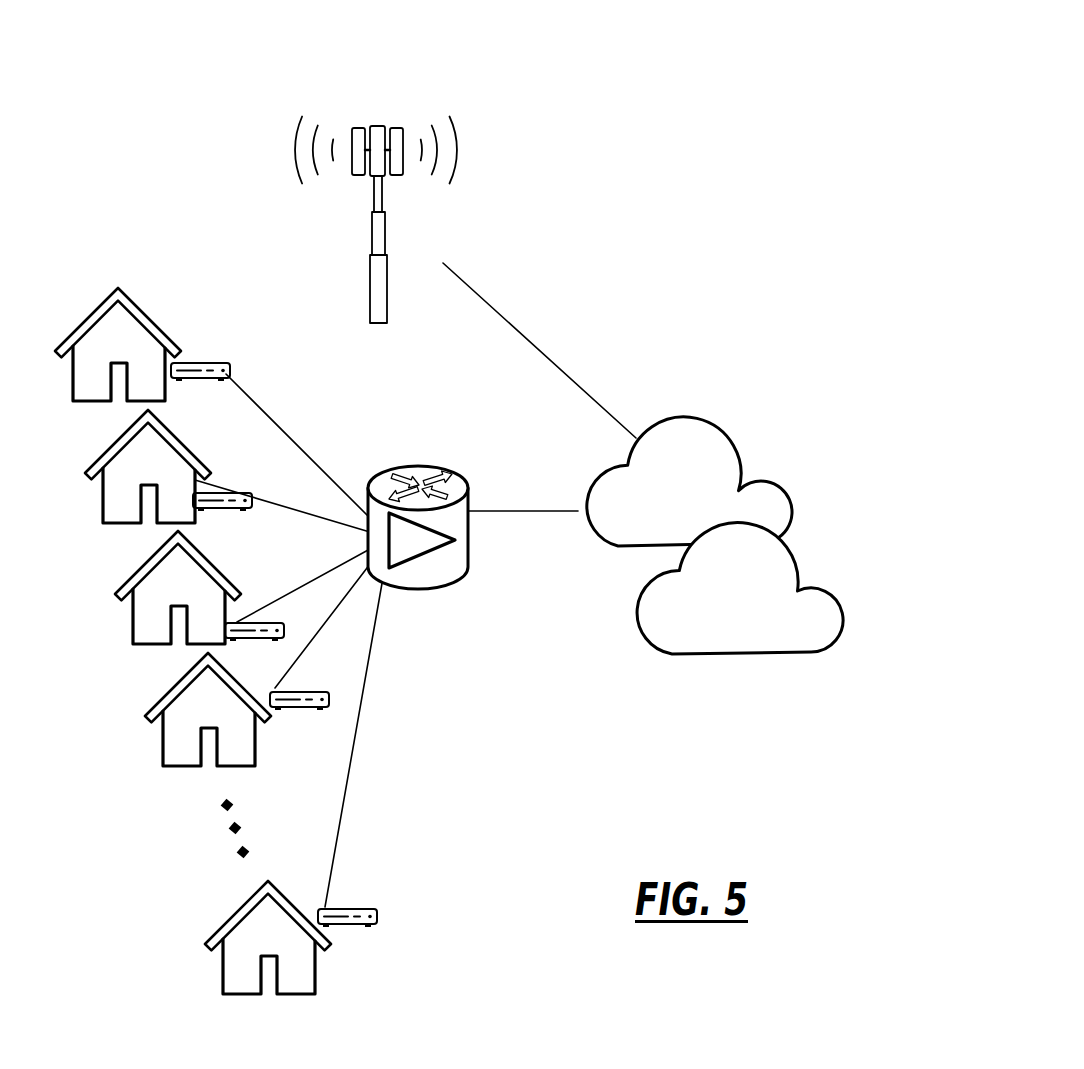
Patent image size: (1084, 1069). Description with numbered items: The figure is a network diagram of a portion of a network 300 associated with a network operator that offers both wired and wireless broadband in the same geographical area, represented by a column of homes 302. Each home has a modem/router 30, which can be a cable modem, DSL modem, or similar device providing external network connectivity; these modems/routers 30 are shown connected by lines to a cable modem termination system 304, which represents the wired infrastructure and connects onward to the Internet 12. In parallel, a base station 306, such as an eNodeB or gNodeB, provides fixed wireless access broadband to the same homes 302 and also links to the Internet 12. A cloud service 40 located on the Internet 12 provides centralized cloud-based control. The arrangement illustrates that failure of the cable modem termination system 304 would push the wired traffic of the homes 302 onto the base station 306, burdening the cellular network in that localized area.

The network 300 is at (686, 68).
The homes 302 is at (144, 277).
The modem/router 30 is at (189, 344).
The base station 306 is at (406, 101).
The cable modem termination system 304 is at (456, 451).
The Internet 12 is at (756, 417).
The cloud service 40 is at (642, 643).